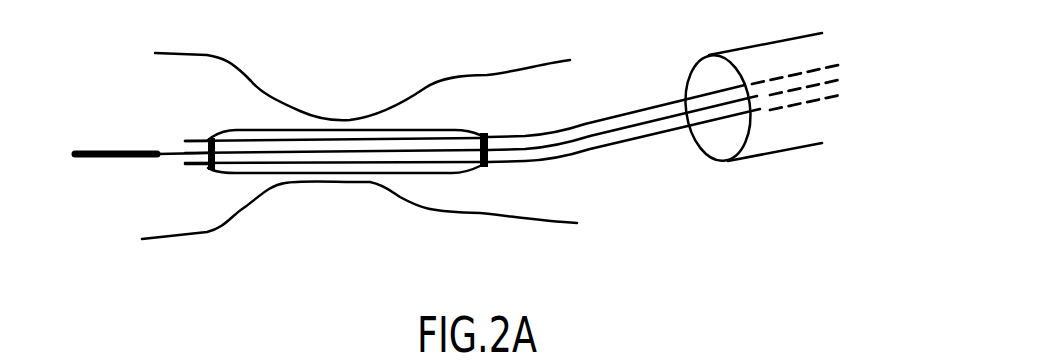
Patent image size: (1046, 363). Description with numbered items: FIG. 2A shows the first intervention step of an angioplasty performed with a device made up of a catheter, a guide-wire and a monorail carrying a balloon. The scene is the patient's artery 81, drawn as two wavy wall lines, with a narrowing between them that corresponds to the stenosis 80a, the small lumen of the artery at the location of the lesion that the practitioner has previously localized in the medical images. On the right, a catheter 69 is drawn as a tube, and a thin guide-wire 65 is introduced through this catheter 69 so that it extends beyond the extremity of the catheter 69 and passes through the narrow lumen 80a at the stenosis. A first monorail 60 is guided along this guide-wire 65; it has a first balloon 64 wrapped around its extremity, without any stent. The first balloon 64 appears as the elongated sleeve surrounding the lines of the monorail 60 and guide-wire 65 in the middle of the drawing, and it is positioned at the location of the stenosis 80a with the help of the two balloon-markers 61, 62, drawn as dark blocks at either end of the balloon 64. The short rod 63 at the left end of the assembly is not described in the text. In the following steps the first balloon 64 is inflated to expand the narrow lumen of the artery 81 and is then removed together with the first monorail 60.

The first monorail 60 is at (648, 140).
The balloon-marker 61 is at (197, 184).
The balloon-marker 62 is at (500, 178).
The handle rod 63 is at (102, 158).
The first balloon 64 is at (415, 172).
The guide-wire 65 is at (676, 117).
The catheter 69 is at (802, 148).
The stenosis 80a is at (324, 110).
The artery 81 is at (174, 241).